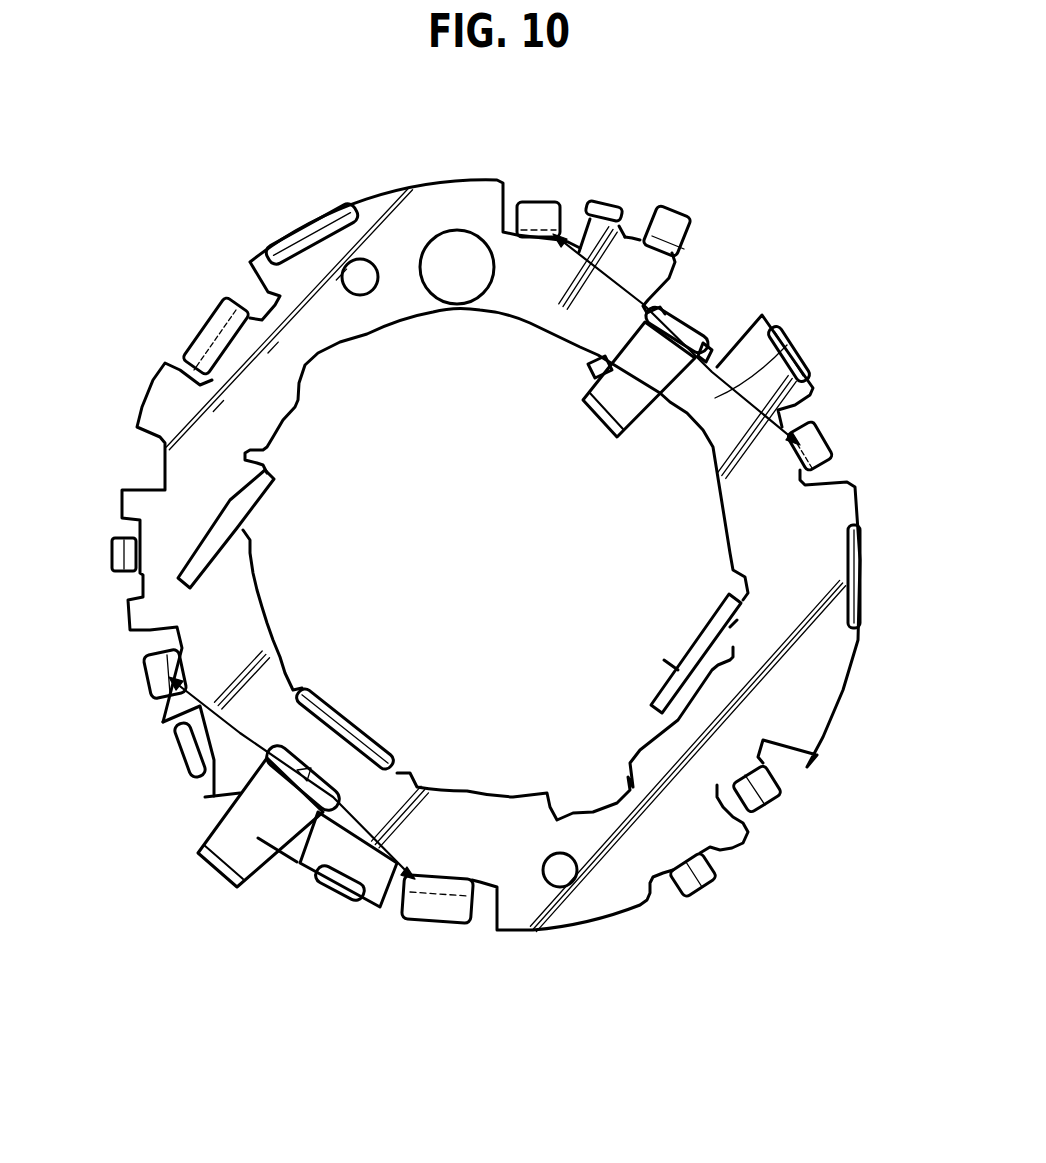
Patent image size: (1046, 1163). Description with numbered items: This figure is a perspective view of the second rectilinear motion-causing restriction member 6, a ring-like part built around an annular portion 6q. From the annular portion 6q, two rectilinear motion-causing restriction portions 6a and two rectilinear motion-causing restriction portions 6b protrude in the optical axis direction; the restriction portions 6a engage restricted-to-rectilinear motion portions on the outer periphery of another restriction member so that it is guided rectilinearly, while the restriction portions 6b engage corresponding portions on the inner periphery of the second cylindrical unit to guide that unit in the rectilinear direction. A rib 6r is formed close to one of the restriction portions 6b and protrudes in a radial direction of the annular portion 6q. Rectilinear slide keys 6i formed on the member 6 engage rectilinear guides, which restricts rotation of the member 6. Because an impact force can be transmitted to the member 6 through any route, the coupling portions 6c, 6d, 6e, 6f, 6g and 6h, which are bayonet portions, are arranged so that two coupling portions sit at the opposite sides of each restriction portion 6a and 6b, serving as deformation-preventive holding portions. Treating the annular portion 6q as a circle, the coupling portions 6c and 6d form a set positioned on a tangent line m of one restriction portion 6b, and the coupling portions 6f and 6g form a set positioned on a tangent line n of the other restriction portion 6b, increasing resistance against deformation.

The second rectilinear motion-causing restriction member 6 is at (810, 710).
The rectilinear motion-causing restriction portion 6a is at (710, 640).
The rectilinear motion-causing restriction portion 6b is at (625, 400).
The coupling portion 6c is at (540, 215).
The coupling portion 6d is at (820, 453).
The coupling portion 6e is at (766, 791).
The coupling portion 6f is at (440, 915).
The coupling portion 6g is at (157, 693).
The coupling portion 6h is at (200, 338).
The rectilinear slide key 6i is at (660, 230).
The annular portion 6q is at (747, 538).
The rib 6r is at (370, 727).
The tangent line m is at (787, 338).
The tangent line n is at (367, 843).